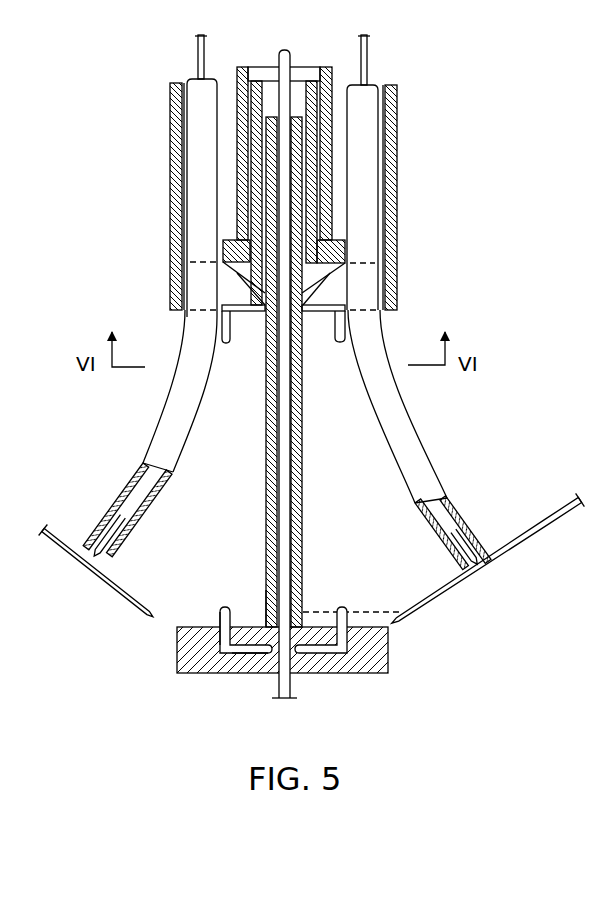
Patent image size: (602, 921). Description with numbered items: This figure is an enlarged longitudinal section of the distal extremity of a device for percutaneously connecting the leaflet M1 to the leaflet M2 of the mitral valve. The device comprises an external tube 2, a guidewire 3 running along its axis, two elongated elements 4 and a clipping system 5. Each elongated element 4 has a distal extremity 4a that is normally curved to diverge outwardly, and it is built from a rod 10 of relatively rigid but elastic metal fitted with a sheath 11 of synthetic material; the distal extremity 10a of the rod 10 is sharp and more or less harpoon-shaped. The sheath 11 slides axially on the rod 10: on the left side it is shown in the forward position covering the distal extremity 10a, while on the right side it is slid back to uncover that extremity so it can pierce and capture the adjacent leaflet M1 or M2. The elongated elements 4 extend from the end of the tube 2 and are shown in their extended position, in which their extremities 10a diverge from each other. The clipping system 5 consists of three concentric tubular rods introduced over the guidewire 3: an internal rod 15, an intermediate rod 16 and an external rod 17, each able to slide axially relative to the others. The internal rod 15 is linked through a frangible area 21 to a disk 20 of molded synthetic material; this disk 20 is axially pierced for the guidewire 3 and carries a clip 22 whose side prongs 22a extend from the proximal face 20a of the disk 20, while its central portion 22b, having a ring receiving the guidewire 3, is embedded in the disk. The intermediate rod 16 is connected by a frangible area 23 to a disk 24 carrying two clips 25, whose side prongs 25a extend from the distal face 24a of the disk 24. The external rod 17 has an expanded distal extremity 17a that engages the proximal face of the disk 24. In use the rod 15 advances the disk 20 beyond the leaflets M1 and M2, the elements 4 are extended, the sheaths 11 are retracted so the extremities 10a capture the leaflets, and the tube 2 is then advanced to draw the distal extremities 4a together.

The external tube 2 is at (394, 101).
The guidewire 3 is at (280, 53).
The elongated elements 4 is at (178, 181).
The distal extremity 4a is at (131, 462).
The clipping system 5 is at (234, 163).
The rod 10 is at (127, 488).
The distal extremity 10a is at (108, 545).
The sheath 11 is at (175, 430).
The internal rod 15 is at (300, 443).
The intermediate rod 16 is at (245, 238).
The external rod 17 is at (332, 150).
The expanded distal extremity 17a is at (343, 255).
The disk 20 is at (388, 657).
The proximal face 20a is at (373, 624).
The frangible area 21 is at (263, 600).
The clip 22 is at (218, 642).
The side prongs 22a is at (217, 617).
The central portion 22b is at (247, 653).
The frangible area 23 is at (233, 258).
The disk 24 is at (337, 292).
The distal face 24a is at (315, 320).
The clips 25 is at (212, 327).
The side prongs 25a is at (225, 343).
The leaflet M1 is at (548, 533).
The leaflet M2 is at (127, 603).